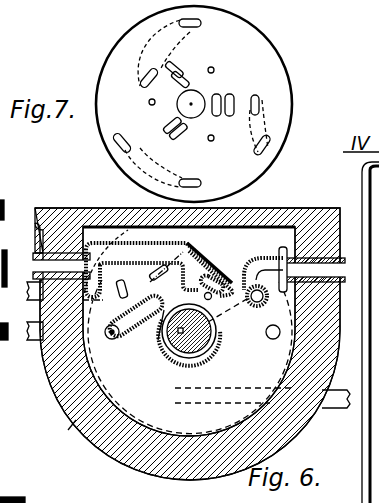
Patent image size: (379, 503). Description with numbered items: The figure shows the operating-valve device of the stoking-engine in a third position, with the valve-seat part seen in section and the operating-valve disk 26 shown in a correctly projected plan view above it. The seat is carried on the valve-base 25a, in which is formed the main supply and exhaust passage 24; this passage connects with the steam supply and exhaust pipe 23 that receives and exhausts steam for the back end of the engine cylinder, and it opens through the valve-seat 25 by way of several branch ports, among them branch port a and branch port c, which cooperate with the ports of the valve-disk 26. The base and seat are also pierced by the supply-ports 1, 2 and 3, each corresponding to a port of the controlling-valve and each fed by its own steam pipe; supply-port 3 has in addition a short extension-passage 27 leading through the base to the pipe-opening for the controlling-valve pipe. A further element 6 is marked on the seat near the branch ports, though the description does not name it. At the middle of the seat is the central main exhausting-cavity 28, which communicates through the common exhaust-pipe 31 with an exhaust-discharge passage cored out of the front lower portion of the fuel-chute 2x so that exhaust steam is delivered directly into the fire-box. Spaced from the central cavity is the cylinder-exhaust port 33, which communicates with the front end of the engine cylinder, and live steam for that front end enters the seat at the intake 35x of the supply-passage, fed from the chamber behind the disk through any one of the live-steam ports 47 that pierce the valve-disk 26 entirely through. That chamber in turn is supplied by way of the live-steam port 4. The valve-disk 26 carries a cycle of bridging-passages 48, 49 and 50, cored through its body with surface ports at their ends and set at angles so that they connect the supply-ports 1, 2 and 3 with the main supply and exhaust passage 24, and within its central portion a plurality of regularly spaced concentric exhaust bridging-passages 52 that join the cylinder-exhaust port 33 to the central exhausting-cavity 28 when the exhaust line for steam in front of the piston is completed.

In FIG. 6, the supply-port 1 is at (118, 280).
In FIG. 6, the supply-port 2 is at (151, 273).
In FIG. 6, the fuel-chute 2x is at (44, 502).
In FIG. 6, the supply-port 3 is at (135, 327).
In FIG. 6, the live-steam port 4 is at (266, 333).
In FIG. 6, the arm 6 is at (209, 264).
In FIG. 6, the steam supply and exhaust pipe 23 is at (40, 256).
In FIG. 6, the main supply and exhaust passage 24 is at (112, 250).
In FIG. 6, the valve-seat 25 is at (187, 344).
In FIG. 6, the valve-base 25a is at (54, 434).
In FIG. 7, the operating-valve disk 26 is at (194, 104).
In FIG. 6, the extension-passage 27 is at (121, 342).
In FIG. 6, the central main exhausting-cavity 28 is at (198, 356).
In FIG. 6, the common exhaust-pipe 31 is at (13, 270).
In FIG. 6, the cylinder-exhaust port 33 is at (157, 342).
In FIG. 6, the supply-passage intake 35x is at (291, 270).
In FIG. 7, the live-steam ports 47 is at (216, 153).
In FIG. 7, the bridging-passage 48 is at (168, 172).
In FIG. 7, the bridging-passage 49 is at (270, 122).
In FIG. 7, the bridging-passage 50 is at (134, 40).
In FIG. 7, the concentric exhaust bridging-passages 52 is at (226, 112).
In FIG. 6, the branch port a is at (165, 261).
In FIG. 6, the branch port c is at (208, 276).